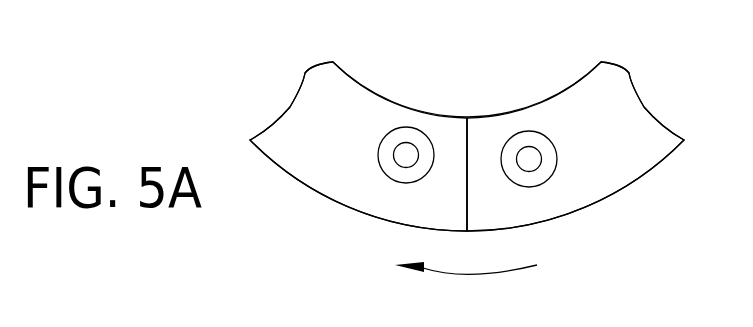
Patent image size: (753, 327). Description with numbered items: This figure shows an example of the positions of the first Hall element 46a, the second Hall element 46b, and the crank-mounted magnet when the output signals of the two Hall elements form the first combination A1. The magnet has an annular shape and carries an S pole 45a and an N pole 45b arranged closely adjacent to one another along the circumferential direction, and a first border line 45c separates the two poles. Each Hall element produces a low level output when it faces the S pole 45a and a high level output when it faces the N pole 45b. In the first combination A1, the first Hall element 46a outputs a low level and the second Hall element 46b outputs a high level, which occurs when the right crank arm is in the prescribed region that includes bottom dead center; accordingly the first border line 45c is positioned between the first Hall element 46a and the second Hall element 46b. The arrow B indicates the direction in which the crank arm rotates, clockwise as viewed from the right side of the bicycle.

The first combination A1 is at (231, 107).
The S pole 45a is at (320, 103).
The N pole 45b is at (613, 103).
The first border line 45c is at (466, 140).
The first Hall element 46a is at (400, 127).
The second Hall element 46b is at (529, 131).
The arrow B is at (484, 262).